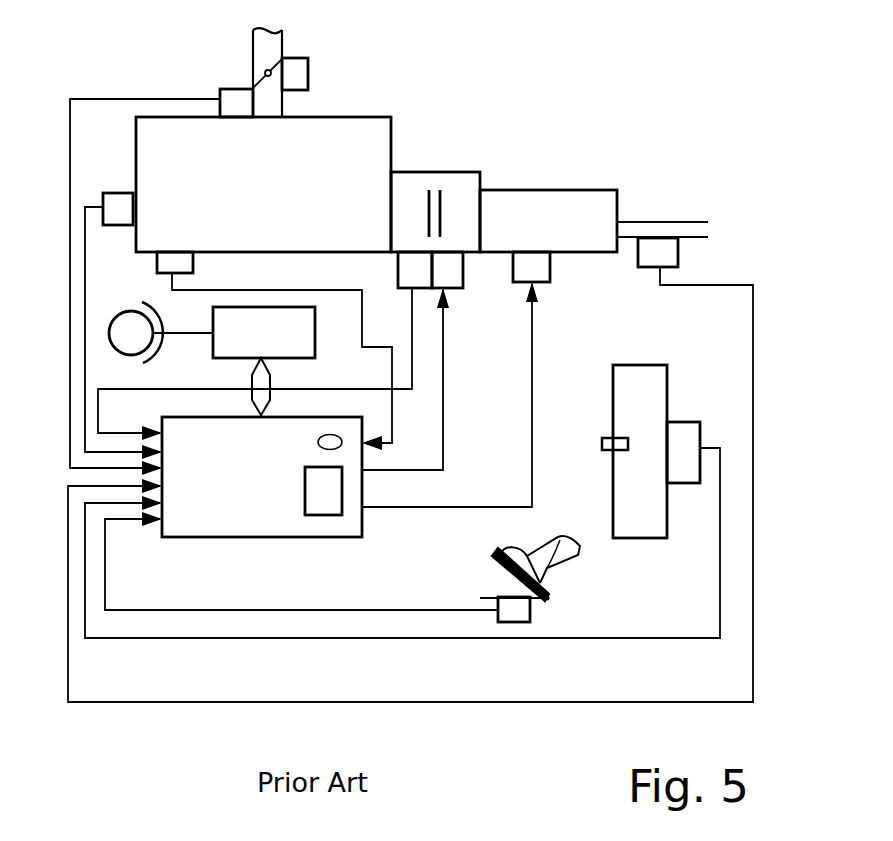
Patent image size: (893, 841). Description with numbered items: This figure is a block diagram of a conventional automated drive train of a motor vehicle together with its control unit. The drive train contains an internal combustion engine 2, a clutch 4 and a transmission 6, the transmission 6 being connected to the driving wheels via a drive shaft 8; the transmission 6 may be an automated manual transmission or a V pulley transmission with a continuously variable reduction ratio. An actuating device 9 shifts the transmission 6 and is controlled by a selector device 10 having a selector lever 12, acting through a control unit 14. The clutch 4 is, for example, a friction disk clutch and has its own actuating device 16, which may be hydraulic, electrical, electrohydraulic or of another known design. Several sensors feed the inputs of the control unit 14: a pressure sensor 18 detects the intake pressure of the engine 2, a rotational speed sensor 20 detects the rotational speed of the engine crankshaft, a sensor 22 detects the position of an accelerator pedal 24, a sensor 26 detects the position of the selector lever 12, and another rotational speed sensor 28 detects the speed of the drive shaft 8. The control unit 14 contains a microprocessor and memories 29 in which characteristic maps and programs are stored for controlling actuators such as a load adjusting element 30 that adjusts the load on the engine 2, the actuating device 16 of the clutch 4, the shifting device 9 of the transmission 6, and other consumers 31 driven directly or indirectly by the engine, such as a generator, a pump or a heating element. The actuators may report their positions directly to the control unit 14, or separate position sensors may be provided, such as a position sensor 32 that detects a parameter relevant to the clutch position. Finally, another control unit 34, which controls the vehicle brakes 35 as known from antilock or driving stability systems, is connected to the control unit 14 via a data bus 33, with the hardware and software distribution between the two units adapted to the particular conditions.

The internal combustion engine 2 is at (257, 198).
The clutch 4 is at (452, 190).
The transmission 6 is at (544, 235).
The drive shaft 8 is at (675, 230).
The actuating device 9 is at (537, 268).
The selector device 10 is at (665, 388).
The selector lever 12 is at (606, 437).
The control unit 14 is at (234, 490).
The actuating device 16 is at (460, 288).
The pressure sensor 18 is at (225, 92).
The rotational speed sensor 20 is at (120, 193).
The sensor 22 is at (532, 606).
The accelerator pedal 24 is at (540, 548).
The sensor 26 is at (670, 433).
The rotational speed sensor 28 is at (680, 254).
The memories 29 is at (326, 495).
The load adjusting element 30 is at (292, 68).
The consumers 31 is at (185, 262).
The position sensor 32 is at (397, 282).
The data bus 33 is at (262, 380).
The control unit 34 is at (249, 346).
The vehicle brakes 35 is at (120, 344).